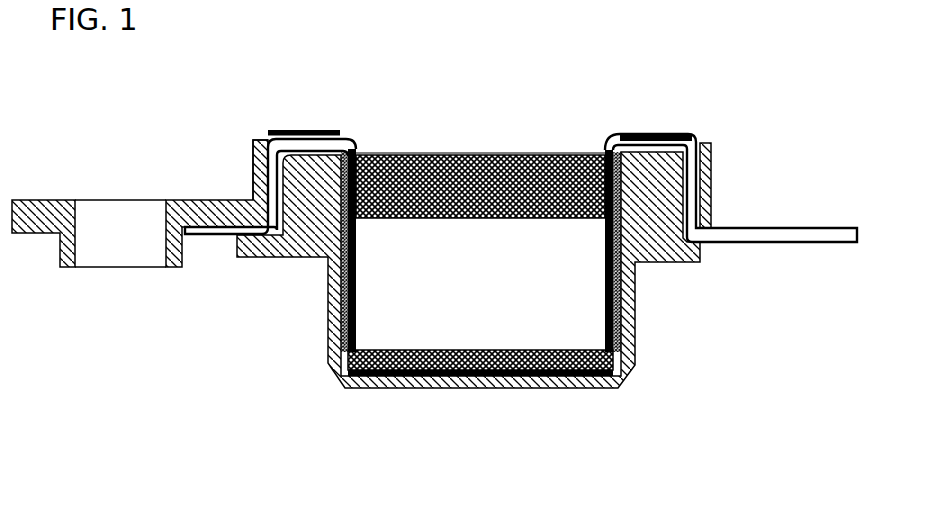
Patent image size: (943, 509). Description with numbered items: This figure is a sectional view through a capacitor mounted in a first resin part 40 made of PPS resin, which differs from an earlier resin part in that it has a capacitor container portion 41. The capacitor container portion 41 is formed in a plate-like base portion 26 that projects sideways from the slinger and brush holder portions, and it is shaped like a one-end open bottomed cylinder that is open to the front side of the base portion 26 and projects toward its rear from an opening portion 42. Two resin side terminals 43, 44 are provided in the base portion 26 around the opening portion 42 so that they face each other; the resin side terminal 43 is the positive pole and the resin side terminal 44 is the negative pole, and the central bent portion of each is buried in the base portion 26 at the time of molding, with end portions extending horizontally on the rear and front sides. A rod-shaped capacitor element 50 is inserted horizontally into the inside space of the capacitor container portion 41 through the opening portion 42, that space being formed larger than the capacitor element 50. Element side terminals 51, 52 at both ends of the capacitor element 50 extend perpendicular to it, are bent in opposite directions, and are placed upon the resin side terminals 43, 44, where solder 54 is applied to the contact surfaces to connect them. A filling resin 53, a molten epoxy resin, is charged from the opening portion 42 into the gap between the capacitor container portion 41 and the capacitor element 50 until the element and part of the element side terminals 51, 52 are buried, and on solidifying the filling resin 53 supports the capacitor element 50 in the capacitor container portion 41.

The base portion 26 is at (193, 206).
The first resin part 40 is at (96, 200).
The capacitor container portion 41 is at (637, 358).
The opening portion 42 is at (398, 153).
The resin side terminal 43 is at (788, 243).
The resin side terminal 44 is at (216, 237).
The capacitor element 50 is at (477, 290).
The element side terminal 51 is at (660, 131).
The element side terminal 52 is at (300, 128).
The filling resin 53 is at (523, 152).
The solder 54 is at (258, 138).